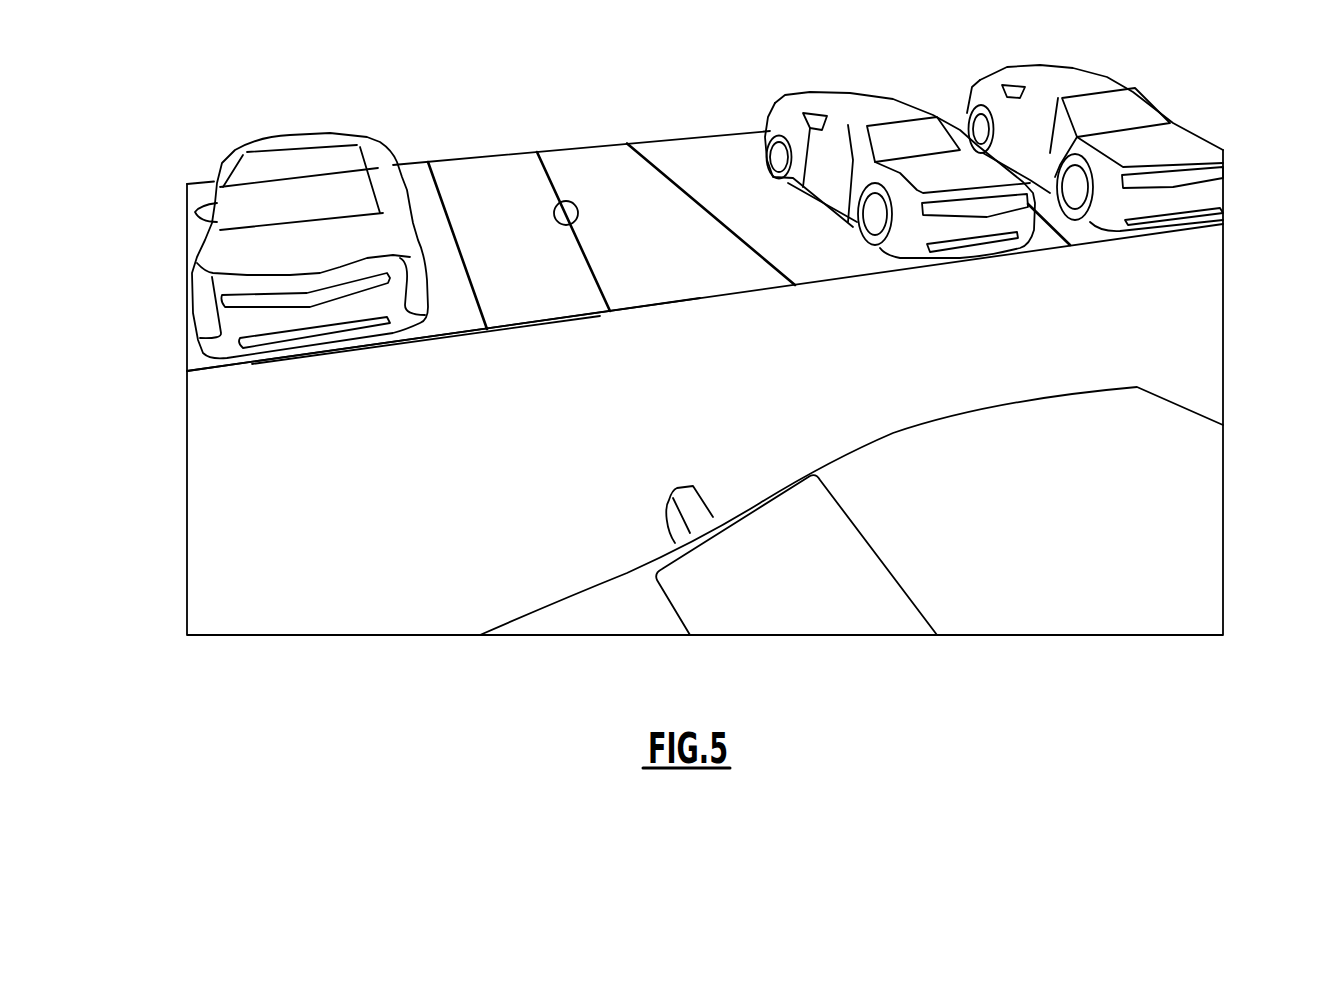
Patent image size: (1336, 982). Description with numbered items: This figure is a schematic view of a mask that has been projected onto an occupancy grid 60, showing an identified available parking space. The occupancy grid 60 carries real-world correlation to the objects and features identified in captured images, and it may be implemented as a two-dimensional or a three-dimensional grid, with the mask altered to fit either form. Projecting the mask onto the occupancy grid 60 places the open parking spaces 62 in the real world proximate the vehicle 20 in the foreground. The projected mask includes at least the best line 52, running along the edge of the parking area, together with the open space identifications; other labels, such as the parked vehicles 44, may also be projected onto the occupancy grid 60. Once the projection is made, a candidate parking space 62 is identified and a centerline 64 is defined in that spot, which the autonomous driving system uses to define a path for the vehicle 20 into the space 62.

The host vehicle 20 is at (723, 582).
The vehicles 44 is at (303, 158).
The best line 52 is at (252, 363).
The occupancy grid 60 is at (1180, 305).
The candidate parking space 62 is at (513, 197).
The centerline 64 is at (577, 204).